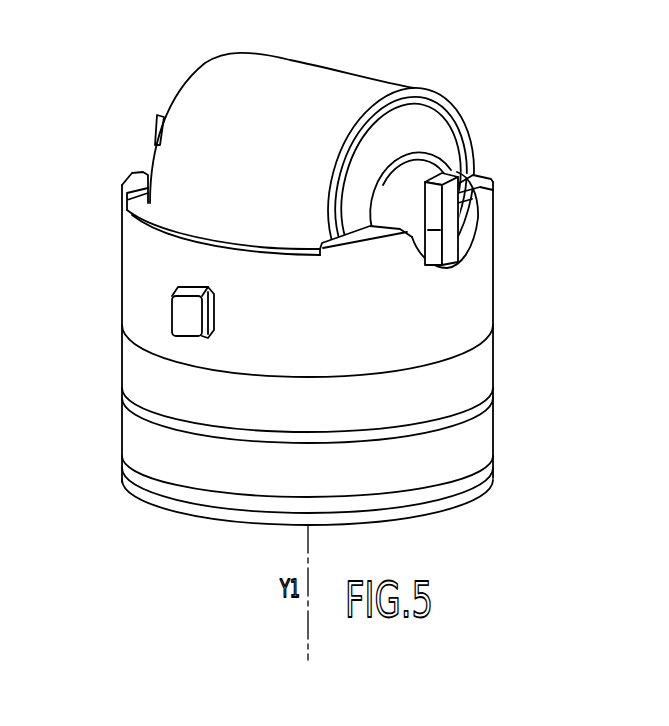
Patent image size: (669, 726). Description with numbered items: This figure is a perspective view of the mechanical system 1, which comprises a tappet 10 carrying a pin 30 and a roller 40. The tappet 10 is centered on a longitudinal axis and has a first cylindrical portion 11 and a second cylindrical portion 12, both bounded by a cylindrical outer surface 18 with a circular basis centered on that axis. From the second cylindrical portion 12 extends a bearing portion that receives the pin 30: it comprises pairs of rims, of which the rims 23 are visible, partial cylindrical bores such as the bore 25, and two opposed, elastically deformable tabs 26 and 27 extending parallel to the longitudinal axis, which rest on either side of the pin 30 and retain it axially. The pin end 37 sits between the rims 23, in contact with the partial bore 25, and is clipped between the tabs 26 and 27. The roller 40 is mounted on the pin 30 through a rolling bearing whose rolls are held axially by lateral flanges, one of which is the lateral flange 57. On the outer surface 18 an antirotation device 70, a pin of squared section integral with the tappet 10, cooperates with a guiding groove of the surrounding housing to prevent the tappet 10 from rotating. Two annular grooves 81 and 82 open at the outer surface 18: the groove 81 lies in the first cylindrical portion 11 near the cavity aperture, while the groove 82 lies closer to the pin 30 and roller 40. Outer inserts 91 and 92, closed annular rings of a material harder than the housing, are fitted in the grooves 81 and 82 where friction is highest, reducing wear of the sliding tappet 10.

The mechanical system 1 is at (524, 116).
The tappet 10 is at (180, 530).
The first cylindrical portion 11 is at (452, 498).
The second cylindrical portion 12 is at (132, 236).
The cylindrical outer surface 18 is at (460, 285).
The rims 23 is at (492, 182).
The partial cylindrical bore 25 is at (480, 217).
The tab 26 is at (161, 116).
The tab 27 is at (447, 227).
The pin 30 is at (404, 163).
The pin end 37 is at (415, 170).
The roller 40 is at (307, 88).
The lateral flange 57 is at (396, 132).
The antirotation device 70 is at (183, 307).
The annular groove 81 is at (157, 468).
The annular groove 82 is at (178, 413).
The outer insert 91 is at (483, 432).
The outer insert 92 is at (477, 365).